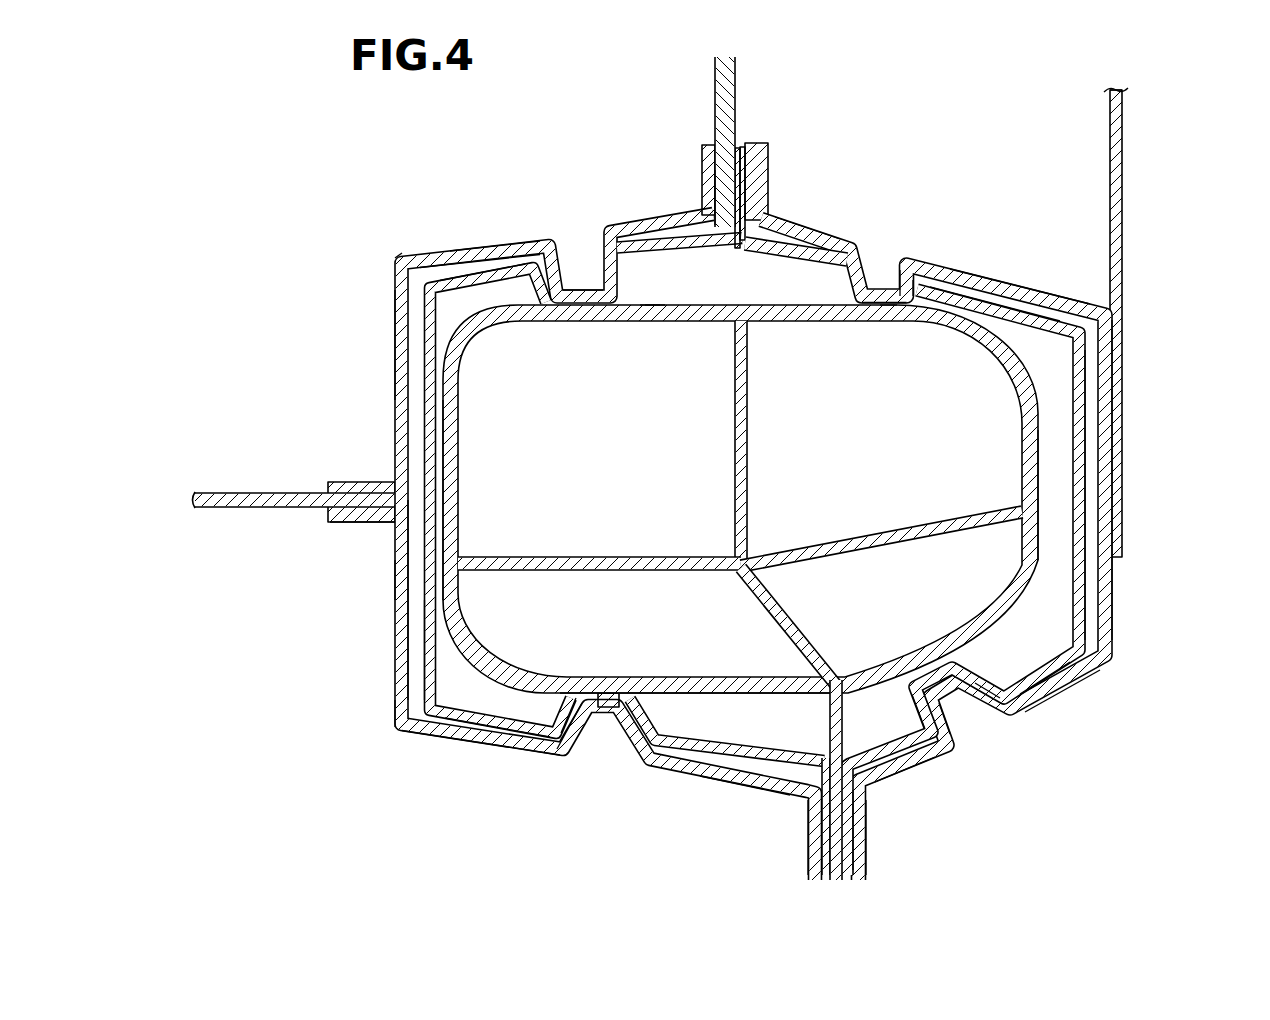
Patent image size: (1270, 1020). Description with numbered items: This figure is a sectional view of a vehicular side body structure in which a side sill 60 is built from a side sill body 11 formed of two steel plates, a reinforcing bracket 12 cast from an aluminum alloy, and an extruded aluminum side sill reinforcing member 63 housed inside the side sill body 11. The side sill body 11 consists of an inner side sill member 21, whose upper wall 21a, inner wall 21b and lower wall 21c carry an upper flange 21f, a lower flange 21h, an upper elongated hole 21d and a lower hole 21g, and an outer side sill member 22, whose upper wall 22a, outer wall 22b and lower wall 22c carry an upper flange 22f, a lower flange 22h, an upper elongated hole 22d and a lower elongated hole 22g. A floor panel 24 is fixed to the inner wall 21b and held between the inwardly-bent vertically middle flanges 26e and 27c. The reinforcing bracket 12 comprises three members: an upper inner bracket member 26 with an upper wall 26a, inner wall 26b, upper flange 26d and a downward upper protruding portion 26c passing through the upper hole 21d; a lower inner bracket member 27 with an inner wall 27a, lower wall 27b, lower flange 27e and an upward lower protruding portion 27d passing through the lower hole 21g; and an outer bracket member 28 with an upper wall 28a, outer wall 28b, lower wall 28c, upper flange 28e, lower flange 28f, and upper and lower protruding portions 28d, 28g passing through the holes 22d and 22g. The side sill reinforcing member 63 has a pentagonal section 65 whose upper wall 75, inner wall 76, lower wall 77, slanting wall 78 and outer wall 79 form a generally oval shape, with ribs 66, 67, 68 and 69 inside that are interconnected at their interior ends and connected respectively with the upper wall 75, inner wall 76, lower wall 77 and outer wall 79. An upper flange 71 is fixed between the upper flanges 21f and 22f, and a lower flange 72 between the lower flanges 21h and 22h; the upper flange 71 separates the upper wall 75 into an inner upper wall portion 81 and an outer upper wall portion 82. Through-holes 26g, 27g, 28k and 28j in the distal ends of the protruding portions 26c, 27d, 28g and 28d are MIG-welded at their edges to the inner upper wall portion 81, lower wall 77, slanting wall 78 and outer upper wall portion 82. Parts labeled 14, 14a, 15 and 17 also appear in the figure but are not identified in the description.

The side sill body 11 is at (480, 742).
The reinforcing bracket 12 is at (400, 605).
The upper rod 14 is at (708, 64).
The rod lower portion 14a is at (714, 185).
The side plate 15 is at (1118, 162).
The mounting bracket 17 is at (1134, 120).
The inner side sill member 21 is at (417, 357).
The upper wall 21a is at (471, 313).
The inner wall 21b is at (428, 665).
The lower wall 21c is at (510, 730).
The upper elongated hole 21d is at (612, 246).
The upper flange 21f is at (738, 148).
The lower hole 21g is at (571, 725).
The lower flange 21h is at (824, 878).
The outer side sill member 22 is at (1035, 298).
The upper wall 22a is at (1040, 323).
The outer wall 22b is at (1086, 520).
The lower wall 22c is at (1047, 690).
The upper elongated hole 22d is at (906, 288).
The upper flange 22f is at (745, 148).
The lower elongated hole 22g is at (943, 697).
The lower flange 22h is at (848, 878).
The floor panel 24 is at (201, 478).
The upper inner bracket member 26 is at (387, 268).
The upper wall 26a is at (505, 243).
The inner wall 26b is at (398, 305).
The upper protruding portion 26c is at (458, 238).
The upper flange 26d is at (706, 148).
The inwardly-bent vertically middle flange 26e is at (340, 484).
The through-hole 26g is at (583, 292).
The lower inner bracket member 27 is at (390, 716).
The inner wall 27a is at (400, 572).
The lower wall 27b is at (730, 778).
The inwardly-bent vertically middle flange 27c is at (345, 524).
The lower protruding portion 27d is at (572, 712).
The lower flange 27e is at (813, 848).
The through-hole 27g is at (608, 708).
The outer bracket member 28 is at (1121, 642).
The upper wall 28a is at (797, 228).
The outer wall 28b is at (1113, 580).
The lower wall 28c is at (913, 752).
The upper protruding portion 28d is at (950, 275).
The upper flange 28e is at (768, 152).
The lower flange 28f is at (864, 850).
The lower protruding portion 28g is at (1050, 684).
The through-hole 28j is at (892, 274).
The through-hole 28k is at (976, 670).
The side sill 60 is at (353, 156).
The side sill reinforcing member 63 is at (447, 309).
The pentagonal section 65 is at (1052, 378).
The rib 66 is at (733, 420).
The rib 67 is at (585, 566).
The rib 68 is at (770, 620).
The rib 69 is at (872, 537).
The upper flange 71 is at (741, 148).
The lower flange 72 is at (836, 880).
The upper wall 75 is at (652, 294).
The inner wall 76 is at (446, 395).
The lower wall 77 is at (690, 695).
The slanting wall 78 is at (1085, 694).
The outer wall 79 is at (1040, 428).
The inner upper wall portion 81 is at (652, 303).
The outer upper wall portion 82 is at (876, 298).